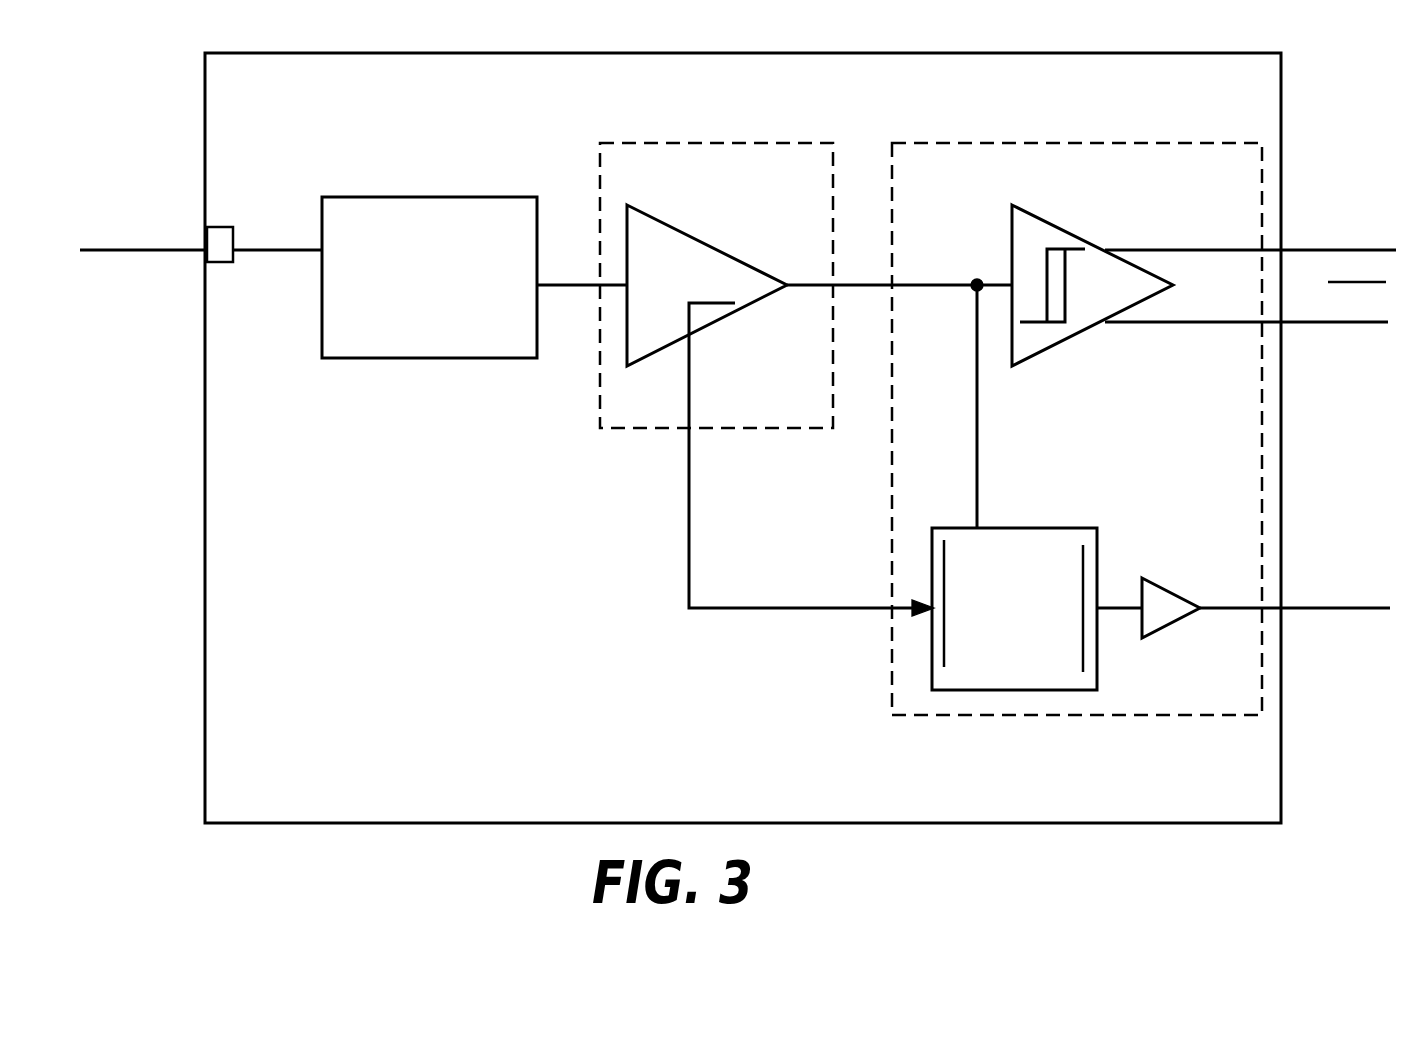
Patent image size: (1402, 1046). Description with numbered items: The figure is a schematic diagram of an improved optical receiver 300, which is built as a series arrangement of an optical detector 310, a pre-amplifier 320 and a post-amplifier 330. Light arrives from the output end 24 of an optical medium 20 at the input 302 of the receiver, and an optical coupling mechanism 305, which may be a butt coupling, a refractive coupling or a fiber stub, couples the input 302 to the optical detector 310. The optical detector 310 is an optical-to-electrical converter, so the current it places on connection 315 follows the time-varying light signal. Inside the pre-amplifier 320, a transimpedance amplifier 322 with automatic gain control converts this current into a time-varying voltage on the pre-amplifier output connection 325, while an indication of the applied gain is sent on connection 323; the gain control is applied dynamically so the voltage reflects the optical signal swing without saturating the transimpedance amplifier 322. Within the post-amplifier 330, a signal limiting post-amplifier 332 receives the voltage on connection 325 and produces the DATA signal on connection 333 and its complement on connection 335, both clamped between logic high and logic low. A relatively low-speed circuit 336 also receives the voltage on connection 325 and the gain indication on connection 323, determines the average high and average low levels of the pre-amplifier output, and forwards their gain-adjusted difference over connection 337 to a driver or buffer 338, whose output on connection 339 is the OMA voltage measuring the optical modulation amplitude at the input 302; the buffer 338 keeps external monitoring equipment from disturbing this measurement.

The optical medium 20 is at (95, 252).
The output end of optical medium 24 is at (196, 222).
The optical receiver 300 is at (743, 438).
The input 302 is at (218, 264).
The optical coupling mechanism 305 is at (285, 226).
The optical detector 310 is at (429, 277).
The connection 315 is at (566, 258).
The pre-amplifier 320 is at (716, 285).
The transimpedance amplifier 322 is at (670, 245).
The connection 323 is at (735, 608).
The pre-amplifier output connection 325 is at (858, 265).
The post-amplifier 330 is at (1077, 429).
The signal limiting post-amplifier 332 is at (1055, 240).
The connection 333 is at (1305, 250).
The connection 335 is at (1308, 323).
The low-speed circuit 336 is at (1005, 528).
The connection 337 is at (1133, 580).
The buffer 338 is at (1155, 588).
The connection 339 is at (1315, 609).